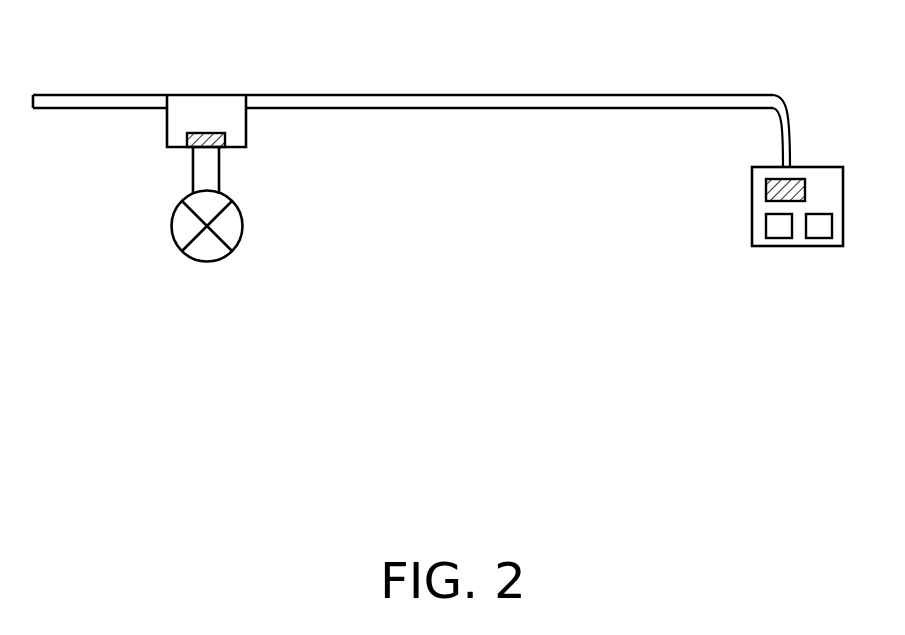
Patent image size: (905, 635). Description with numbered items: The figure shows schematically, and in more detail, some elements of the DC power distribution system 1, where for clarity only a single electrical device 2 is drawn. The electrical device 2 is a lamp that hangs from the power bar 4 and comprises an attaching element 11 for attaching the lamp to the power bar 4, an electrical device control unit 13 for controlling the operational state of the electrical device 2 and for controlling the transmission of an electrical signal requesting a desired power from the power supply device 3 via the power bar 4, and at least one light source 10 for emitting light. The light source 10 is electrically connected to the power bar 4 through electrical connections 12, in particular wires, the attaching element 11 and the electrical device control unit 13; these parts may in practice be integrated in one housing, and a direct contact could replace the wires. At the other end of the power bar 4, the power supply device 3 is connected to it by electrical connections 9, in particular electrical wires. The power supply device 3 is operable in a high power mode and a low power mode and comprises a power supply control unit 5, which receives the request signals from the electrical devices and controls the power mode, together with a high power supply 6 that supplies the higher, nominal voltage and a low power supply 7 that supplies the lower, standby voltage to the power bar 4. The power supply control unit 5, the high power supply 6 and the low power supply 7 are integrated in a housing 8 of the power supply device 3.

The DC power distribution system 1 is at (483, 380).
The electrical device 2 is at (207, 196).
The power supply device 3 is at (771, 233).
The power bar 4 is at (425, 95).
The power supply control unit 5 is at (766, 188).
The high power supply 6 is at (776, 232).
The low power supply 7 is at (820, 232).
The housing 8 is at (829, 166).
The electrical connections 9 is at (800, 88).
The light source 10 is at (171, 224).
The attaching element 11 is at (167, 137).
The electrical connections 12 is at (244, 178).
The electrical device control unit 13 is at (220, 132).